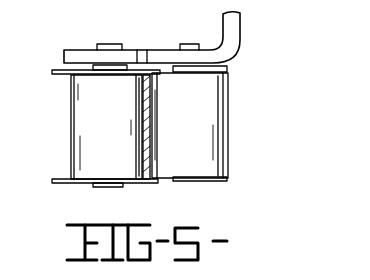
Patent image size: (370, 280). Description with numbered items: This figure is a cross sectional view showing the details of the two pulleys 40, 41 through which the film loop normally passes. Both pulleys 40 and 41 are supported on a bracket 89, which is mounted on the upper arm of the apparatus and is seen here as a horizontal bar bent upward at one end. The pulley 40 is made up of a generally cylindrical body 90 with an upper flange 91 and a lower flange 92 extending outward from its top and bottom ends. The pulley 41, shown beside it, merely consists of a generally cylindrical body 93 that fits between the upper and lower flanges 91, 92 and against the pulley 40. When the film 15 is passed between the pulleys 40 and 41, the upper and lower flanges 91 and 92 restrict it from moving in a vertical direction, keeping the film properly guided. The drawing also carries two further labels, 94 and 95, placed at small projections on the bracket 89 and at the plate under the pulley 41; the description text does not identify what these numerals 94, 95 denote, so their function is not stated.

The film 15 is at (150, 160).
The pulley 40 is at (73, 127).
The pulley 41 is at (222, 125).
The bracket 89 is at (147, 50).
The cylindrical body 90 is at (68, 152).
The upper flange 91 is at (52, 73).
The lower flange 92 is at (55, 185).
The cylindrical body 93 is at (226, 118).
The locating projection 94 is at (110, 44).
The upper plate of second housing 95 is at (200, 70).